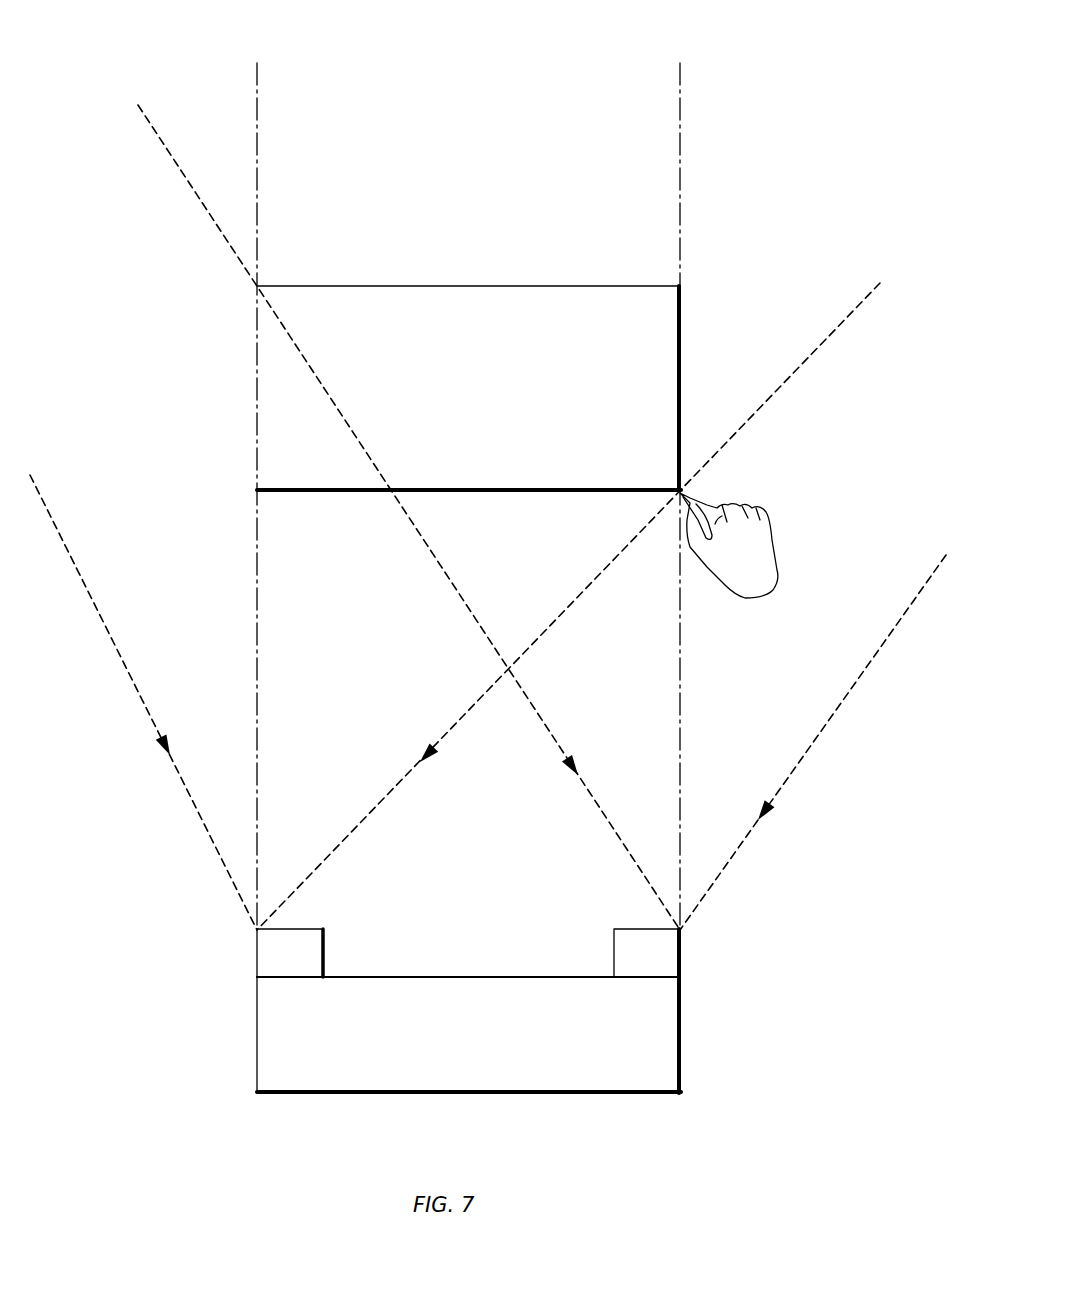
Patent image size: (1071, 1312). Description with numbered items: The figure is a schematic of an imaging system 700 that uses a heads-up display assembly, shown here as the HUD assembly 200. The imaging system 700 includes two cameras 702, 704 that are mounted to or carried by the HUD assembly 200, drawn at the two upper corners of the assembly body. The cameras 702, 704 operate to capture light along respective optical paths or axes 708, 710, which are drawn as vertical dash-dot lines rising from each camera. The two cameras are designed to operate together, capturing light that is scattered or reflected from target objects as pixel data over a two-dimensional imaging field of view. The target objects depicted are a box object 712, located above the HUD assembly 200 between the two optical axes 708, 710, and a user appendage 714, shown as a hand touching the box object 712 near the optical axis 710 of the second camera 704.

The imaging system 700 is at (108, 46).
The optical path/axis 708 is at (257, 116).
The optical path/axis 710 is at (680, 163).
The box object 712 is at (510, 474).
The user appendage 714 is at (770, 518).
The camera 702 is at (266, 960).
The camera 704 is at (672, 958).
The HUD assembly 200 is at (710, 1100).